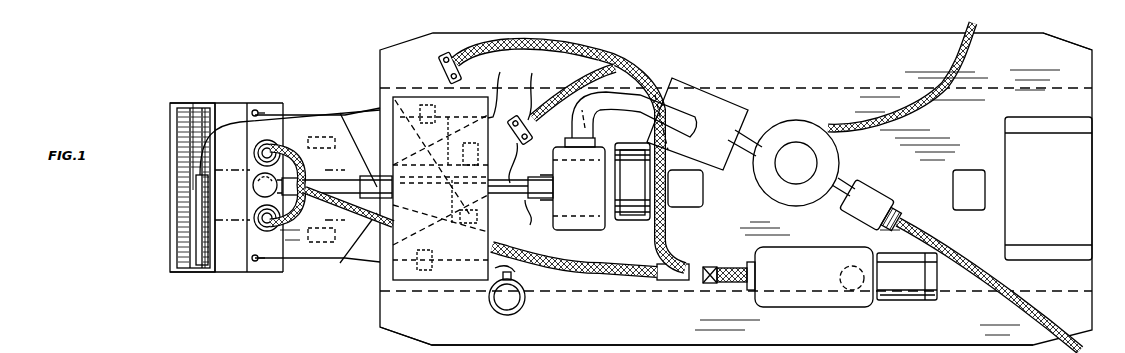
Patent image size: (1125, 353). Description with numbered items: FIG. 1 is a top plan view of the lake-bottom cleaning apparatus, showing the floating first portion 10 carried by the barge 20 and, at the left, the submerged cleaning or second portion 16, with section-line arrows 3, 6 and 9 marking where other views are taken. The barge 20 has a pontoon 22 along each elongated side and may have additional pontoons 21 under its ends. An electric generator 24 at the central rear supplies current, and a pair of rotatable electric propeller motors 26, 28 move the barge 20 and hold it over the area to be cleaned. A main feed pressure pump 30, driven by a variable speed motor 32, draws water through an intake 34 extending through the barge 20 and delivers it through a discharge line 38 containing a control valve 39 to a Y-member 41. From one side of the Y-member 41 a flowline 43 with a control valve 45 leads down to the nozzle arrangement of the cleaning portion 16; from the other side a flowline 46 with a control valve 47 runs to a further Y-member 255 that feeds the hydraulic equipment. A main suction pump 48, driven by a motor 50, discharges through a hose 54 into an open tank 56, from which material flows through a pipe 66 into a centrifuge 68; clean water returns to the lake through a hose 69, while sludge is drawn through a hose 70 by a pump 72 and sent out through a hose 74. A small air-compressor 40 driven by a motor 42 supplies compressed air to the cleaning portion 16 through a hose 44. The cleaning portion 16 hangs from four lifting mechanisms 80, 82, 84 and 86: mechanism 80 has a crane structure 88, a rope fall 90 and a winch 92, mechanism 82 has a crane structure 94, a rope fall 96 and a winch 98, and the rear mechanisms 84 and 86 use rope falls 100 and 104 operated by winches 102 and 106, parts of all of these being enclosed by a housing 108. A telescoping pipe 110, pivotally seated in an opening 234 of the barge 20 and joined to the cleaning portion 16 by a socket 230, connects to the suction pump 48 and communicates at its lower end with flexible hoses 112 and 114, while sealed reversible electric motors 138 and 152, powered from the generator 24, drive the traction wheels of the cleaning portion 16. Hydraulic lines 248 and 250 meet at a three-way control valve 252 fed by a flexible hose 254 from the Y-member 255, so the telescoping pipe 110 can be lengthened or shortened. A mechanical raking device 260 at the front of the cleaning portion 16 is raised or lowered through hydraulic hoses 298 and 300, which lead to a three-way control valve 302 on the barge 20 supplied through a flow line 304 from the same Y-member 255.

The section line 3 is at (468, 192).
The section line 6 is at (231, 163).
The section line 9 is at (204, 224).
The first portion 10 is at (368, 67).
The second portion 16 is at (224, 270).
The barge 20 is at (1080, 104).
The additional pontoons 21 is at (628, 240).
The pontoon 22 is at (1076, 75).
The electric generator 24 is at (1078, 180).
The rotatable electric propeller motor 26 is at (967, 172).
The rotatable electric propeller motor 28 is at (703, 196).
The main feed pump 30 is at (803, 298).
The variable speed motor 32 is at (908, 300).
The water intake 34 is at (840, 270).
The discharge line 38 is at (722, 284).
The control valve 39 is at (712, 267).
The air-compressor 40 is at (502, 312).
The Y-member 41 is at (676, 282).
The motor 42 is at (512, 300).
The flowline 43 is at (382, 222).
The hose 44 is at (520, 268).
The control valve 45 is at (600, 262).
The flowline 46 is at (672, 158).
The control valve 47 is at (672, 245).
The main suction pump 48 is at (590, 199).
The variable speed engine motor 50 is at (655, 220).
The discharge hose 54 is at (634, 115).
The open tank 56 is at (718, 95).
The pipe 66 is at (765, 135).
The centrifuge 68 is at (775, 182).
The hose 69 is at (938, 98).
The hose 70 is at (840, 205).
The pump 72 is at (875, 192).
The hose 74 is at (1035, 300).
The lifting mechanism 80 is at (308, 262).
The lifting mechanism 82 is at (305, 112).
The lifting mechanism 84 is at (433, 260).
The lifting mechanism 86 is at (438, 135).
The crane structure 88 is at (352, 262).
The rope fall 90 is at (262, 268).
The winch 92 is at (408, 270).
The crane structure 94 is at (360, 113).
The rope fall 96 is at (268, 112).
The winch 98 is at (416, 100).
The rope fall 100 is at (468, 261).
The winch 102 is at (478, 222).
The rope fall 104 is at (468, 146).
The winch 106 is at (509, 160).
The housing 108 is at (478, 280).
The telescoping pipe 110 is at (372, 176).
The flexible hose 112 is at (280, 225).
The flexible hose 114 is at (280, 150).
The sealed reversible electric motor 138 is at (280, 212).
The sealed reversible electric motor 152 is at (302, 180).
The socket 230 is at (256, 186).
The opening 234 is at (542, 207).
The hydraulic line 248 is at (530, 124).
The hydraulic line 250 is at (487, 90).
The three-way control valve 252 is at (528, 93).
The flexible hose 254 is at (580, 82).
The Y-member 255 is at (625, 65).
The mechanical raking device 260 is at (166, 240).
The hydraulic hose 298 is at (192, 176).
The hydraulic hose 300 is at (200, 185).
The three-way control valve 302 is at (452, 55).
The flow line 304 is at (545, 42).